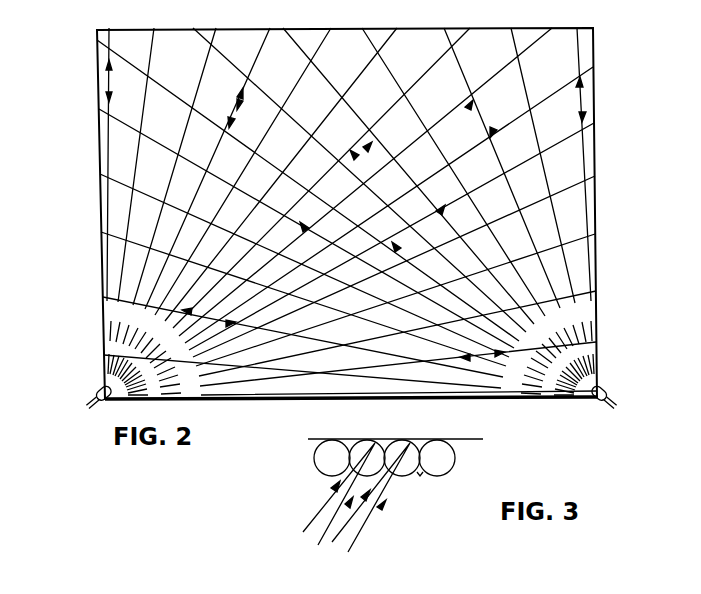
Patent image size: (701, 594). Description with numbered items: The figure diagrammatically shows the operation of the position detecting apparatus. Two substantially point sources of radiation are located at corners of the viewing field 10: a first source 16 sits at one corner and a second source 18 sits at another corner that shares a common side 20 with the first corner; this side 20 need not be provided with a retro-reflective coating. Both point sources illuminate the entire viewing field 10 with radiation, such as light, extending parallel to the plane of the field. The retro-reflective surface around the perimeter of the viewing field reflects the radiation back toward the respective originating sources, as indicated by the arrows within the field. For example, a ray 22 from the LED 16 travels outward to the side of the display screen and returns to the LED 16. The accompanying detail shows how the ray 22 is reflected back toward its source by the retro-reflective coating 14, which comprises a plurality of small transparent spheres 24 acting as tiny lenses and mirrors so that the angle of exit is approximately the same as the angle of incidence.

In FIG. 2, the viewing field 10 is at (576, 94).
In FIG. 3, the retro-reflective coating 14 is at (444, 479).
In FIG. 2, the first source 16 is at (99, 393).
In FIG. 2, the second source 18 is at (602, 391).
In FIG. 2, the common side 20 is at (278, 400).
In FIG. 2, the ray 22 is at (237, 108).
In FIG. 3, the ray 22 is at (387, 530).
In FIG. 3, the transparent spheres 24 is at (428, 488).